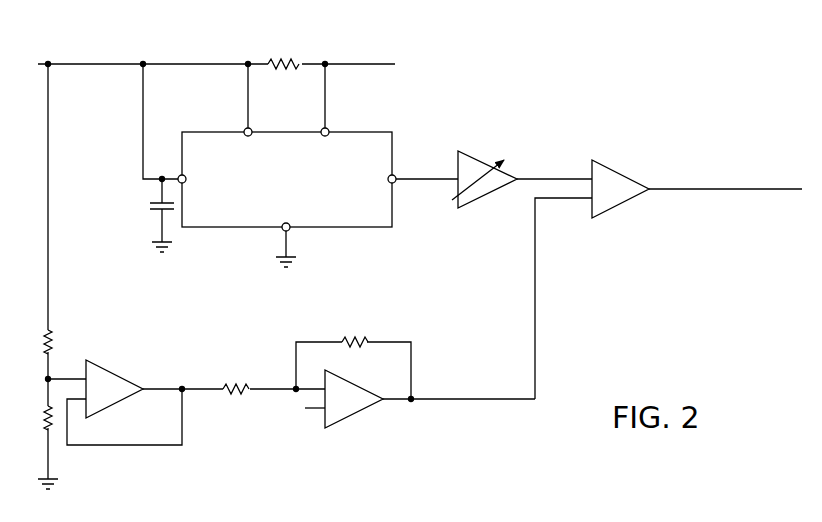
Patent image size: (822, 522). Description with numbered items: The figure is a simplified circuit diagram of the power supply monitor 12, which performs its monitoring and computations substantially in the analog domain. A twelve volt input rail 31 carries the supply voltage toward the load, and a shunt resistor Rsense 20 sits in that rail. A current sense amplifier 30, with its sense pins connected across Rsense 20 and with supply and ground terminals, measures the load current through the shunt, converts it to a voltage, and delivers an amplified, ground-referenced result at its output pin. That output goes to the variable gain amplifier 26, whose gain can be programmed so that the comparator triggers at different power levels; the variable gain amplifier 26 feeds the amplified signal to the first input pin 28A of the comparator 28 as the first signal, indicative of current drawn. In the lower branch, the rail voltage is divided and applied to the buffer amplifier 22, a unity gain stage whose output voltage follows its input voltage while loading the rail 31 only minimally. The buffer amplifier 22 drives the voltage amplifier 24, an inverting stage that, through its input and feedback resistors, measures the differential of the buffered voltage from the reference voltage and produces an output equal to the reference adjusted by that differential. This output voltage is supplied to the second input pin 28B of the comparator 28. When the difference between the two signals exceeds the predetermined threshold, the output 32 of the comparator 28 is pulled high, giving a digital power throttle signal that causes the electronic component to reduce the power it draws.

The power supply monitor 12 is at (560, 40).
The shunt resistor Rsense 20 is at (282, 72).
The buffer amplifier 22 is at (115, 372).
The voltage amplifier 24 is at (355, 415).
The variable gain amplifier 26 is at (490, 194).
The comparator 28 is at (618, 172).
The first input pin 28A is at (558, 176).
The second input pin 28B is at (558, 202).
The current sense amplifier 30 is at (372, 232).
The 12V input rail 31 is at (96, 63).
The output 32 is at (782, 192).